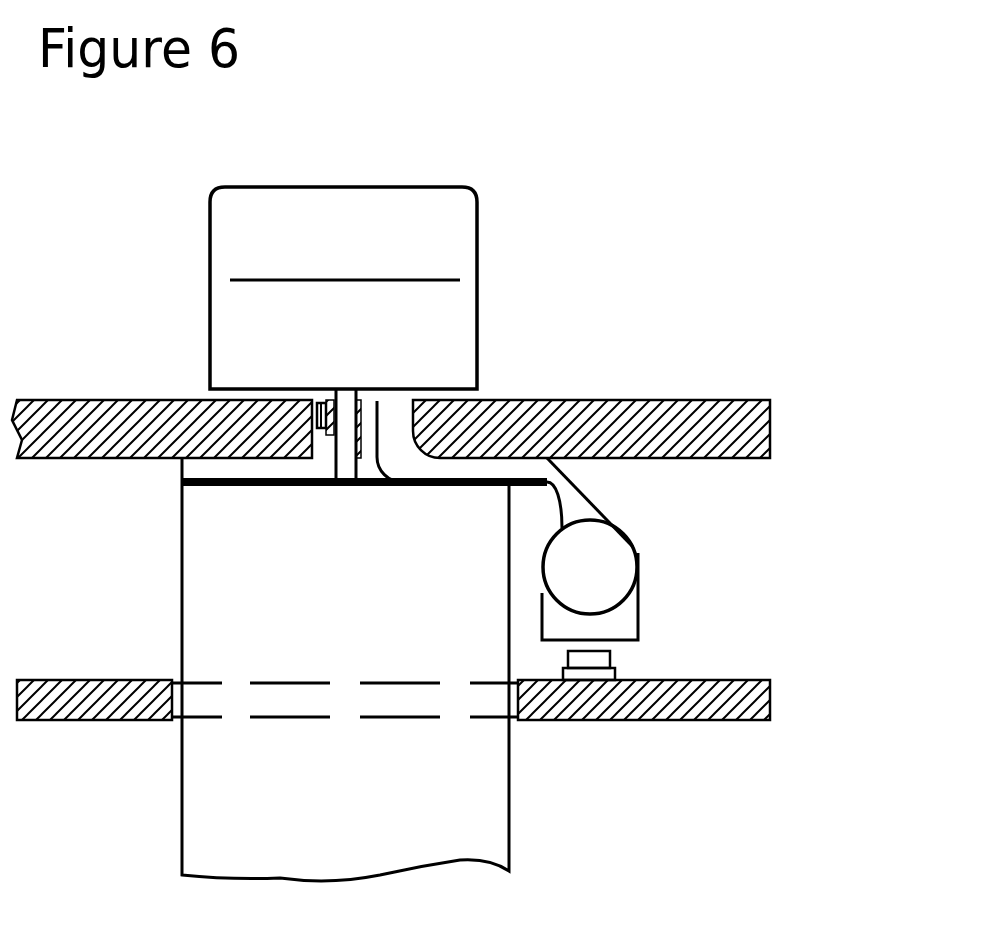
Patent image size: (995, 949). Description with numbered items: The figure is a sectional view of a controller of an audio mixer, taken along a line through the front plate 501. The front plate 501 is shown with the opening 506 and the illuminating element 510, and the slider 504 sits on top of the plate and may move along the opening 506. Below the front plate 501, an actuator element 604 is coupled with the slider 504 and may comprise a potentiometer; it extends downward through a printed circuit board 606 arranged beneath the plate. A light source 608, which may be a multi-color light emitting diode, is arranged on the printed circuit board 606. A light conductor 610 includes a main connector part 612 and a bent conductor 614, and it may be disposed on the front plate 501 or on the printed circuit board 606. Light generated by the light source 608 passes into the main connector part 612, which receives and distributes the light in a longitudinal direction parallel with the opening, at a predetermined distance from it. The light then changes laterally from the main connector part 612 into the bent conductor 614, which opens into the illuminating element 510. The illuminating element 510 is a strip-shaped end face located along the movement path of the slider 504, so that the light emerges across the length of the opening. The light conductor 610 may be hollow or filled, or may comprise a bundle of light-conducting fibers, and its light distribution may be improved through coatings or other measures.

The front plate 501 is at (708, 400).
The slider 504 is at (412, 162).
The opening 506 is at (322, 385).
The illuminating element 510 is at (392, 388).
The actuator element 604 is at (190, 823).
The printed circuit board 606 is at (775, 697).
The light source 608 is at (615, 668).
The light conductor 610 is at (665, 522).
The main connector part 612 is at (640, 555).
The bent conductor 614 is at (477, 470).